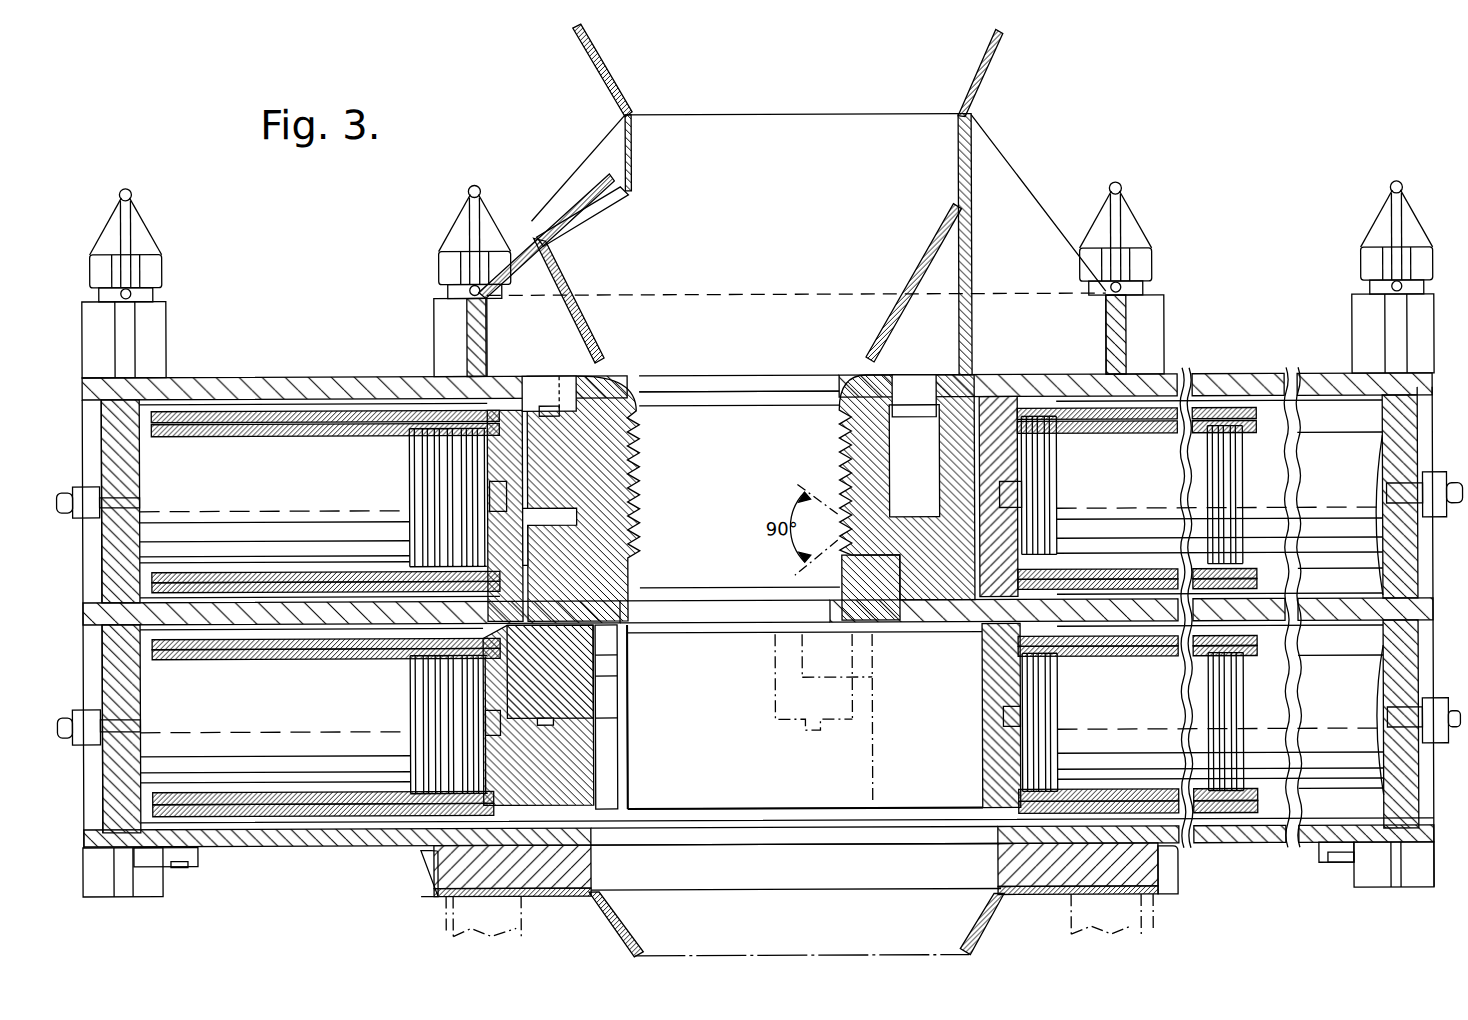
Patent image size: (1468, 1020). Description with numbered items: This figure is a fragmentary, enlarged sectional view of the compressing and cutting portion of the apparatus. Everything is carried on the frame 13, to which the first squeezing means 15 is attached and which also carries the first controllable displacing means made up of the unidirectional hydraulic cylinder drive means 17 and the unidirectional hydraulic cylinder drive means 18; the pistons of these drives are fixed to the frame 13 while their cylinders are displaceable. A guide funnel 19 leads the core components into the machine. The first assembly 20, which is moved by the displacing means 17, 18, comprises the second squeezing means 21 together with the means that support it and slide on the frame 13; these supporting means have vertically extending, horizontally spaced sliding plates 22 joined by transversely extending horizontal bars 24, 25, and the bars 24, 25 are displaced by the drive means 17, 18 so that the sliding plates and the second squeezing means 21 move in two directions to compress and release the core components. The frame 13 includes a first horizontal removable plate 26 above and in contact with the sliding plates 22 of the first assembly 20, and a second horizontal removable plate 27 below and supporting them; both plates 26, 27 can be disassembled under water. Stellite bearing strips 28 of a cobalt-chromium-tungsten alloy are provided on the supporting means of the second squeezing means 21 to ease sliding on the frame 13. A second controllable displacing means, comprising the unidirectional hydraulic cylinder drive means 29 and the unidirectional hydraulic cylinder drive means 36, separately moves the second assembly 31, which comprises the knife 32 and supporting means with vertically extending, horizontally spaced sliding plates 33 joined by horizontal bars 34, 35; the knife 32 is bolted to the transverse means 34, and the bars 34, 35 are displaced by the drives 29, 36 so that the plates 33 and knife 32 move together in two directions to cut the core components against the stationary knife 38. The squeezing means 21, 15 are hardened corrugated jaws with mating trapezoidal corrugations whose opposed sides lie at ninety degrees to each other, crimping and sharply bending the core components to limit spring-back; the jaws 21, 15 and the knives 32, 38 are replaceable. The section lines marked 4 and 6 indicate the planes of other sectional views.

The section line 4- 4 is at (62, 490).
The section line 6- 6 is at (739, 351).
The frame 13 is at (163, 885).
The first squeezing means 15 is at (840, 456).
The unidirectional hydraulic cylinder drive means 17 is at (258, 455).
The unidirectional hydraulic cylinder drive means 18 is at (1272, 433).
The guide funnel 19 is at (978, 92).
The first assembly 20 is at (612, 385).
The second squeezing means 21 is at (640, 520).
The sliding plate 22 is at (686, 577).
The horizontal bar 24 is at (560, 483).
The horizontal bar 25 is at (1010, 523).
The first horizontal removable plate 26 is at (320, 378).
The second horizontal removable plate 27 is at (322, 625).
The bearing strip 28 is at (355, 410).
The unidirectional hydraulic cylinder drive means 29 is at (318, 790).
The second assembly 31 is at (578, 752).
The knife 32 is at (588, 657).
The sliding plate 33 is at (808, 795).
The horizontal bar 34 is at (580, 787).
The horizontal bar 35 is at (982, 750).
The unidirectional hydraulic cylinder drive means 36 is at (1310, 790).
The stationary knife 38 is at (875, 610).